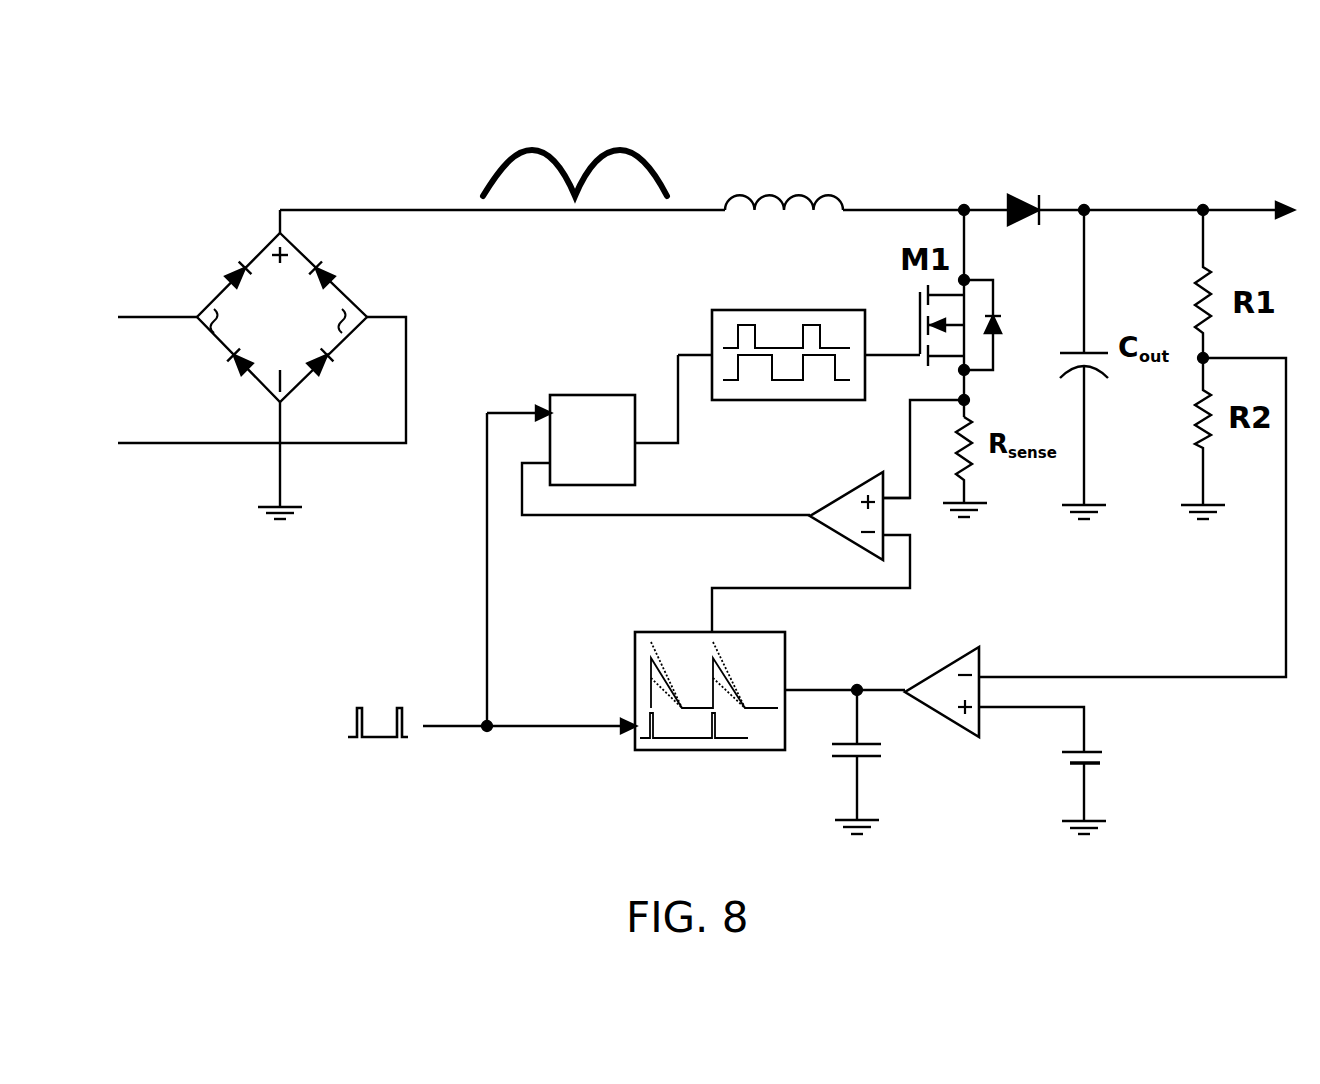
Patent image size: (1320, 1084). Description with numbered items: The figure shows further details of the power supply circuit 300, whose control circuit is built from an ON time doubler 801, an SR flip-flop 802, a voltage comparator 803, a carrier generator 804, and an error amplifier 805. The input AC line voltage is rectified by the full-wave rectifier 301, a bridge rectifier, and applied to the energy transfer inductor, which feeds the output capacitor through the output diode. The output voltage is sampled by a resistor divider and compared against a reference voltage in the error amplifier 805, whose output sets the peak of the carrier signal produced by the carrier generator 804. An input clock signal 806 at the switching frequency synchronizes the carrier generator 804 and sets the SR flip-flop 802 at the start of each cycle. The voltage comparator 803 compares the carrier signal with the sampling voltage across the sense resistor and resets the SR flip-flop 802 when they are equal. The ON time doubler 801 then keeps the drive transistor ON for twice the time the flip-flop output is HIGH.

The power supply circuit 300 is at (366, 141).
The full-wave rectifier 301 is at (224, 232).
The ON time doubler 801 is at (712, 326).
The SR flip-flop 802 is at (556, 395).
The voltage comparator 803 is at (836, 500).
The carrier generator 804 is at (657, 632).
The error amplifier 805 is at (952, 661).
The input clock signal 806 is at (397, 686).